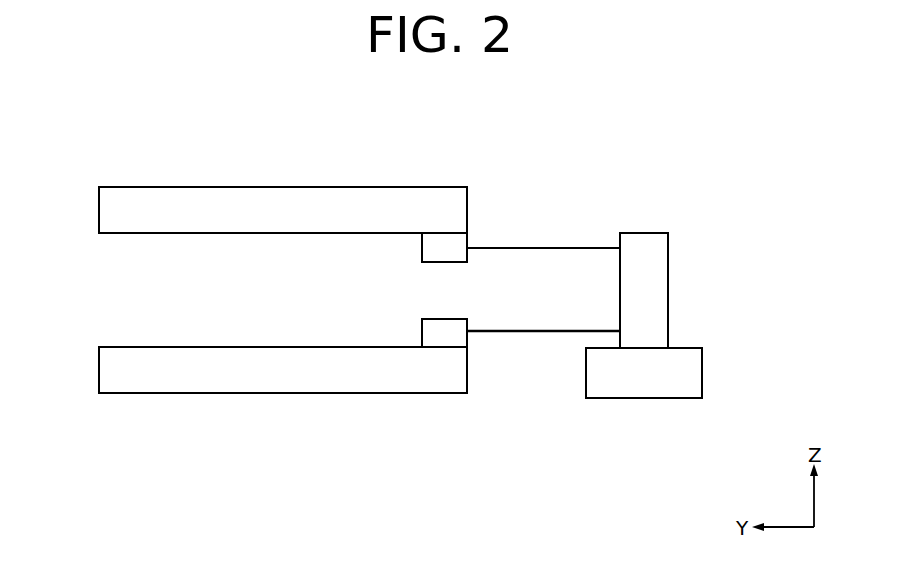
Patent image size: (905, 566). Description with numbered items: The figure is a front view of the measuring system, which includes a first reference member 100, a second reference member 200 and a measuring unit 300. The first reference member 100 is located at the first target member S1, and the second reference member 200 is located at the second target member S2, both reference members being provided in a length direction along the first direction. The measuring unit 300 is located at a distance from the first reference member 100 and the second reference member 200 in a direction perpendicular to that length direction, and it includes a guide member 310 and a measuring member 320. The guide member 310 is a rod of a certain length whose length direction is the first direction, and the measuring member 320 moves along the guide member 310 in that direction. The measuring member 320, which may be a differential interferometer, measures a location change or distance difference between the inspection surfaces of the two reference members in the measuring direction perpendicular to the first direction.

The first target member S1 is at (112, 208).
The second target member S2 is at (112, 373).
The first reference member 100 is at (412, 248).
The second reference member 200 is at (412, 331).
The measuring unit 300 is at (713, 315).
The guide member 310 is at (690, 372).
The measuring member 320 is at (656, 300).